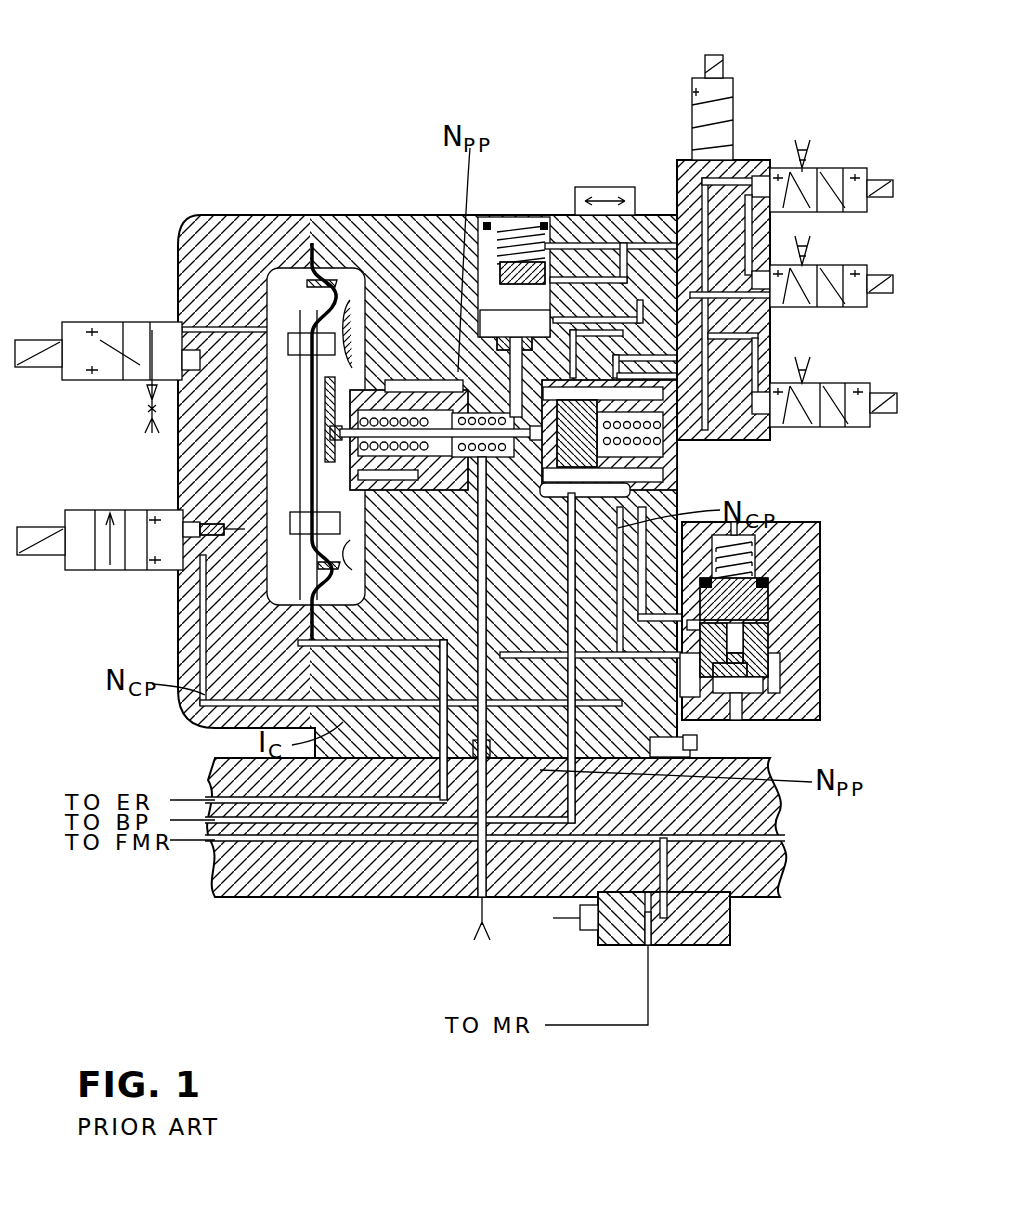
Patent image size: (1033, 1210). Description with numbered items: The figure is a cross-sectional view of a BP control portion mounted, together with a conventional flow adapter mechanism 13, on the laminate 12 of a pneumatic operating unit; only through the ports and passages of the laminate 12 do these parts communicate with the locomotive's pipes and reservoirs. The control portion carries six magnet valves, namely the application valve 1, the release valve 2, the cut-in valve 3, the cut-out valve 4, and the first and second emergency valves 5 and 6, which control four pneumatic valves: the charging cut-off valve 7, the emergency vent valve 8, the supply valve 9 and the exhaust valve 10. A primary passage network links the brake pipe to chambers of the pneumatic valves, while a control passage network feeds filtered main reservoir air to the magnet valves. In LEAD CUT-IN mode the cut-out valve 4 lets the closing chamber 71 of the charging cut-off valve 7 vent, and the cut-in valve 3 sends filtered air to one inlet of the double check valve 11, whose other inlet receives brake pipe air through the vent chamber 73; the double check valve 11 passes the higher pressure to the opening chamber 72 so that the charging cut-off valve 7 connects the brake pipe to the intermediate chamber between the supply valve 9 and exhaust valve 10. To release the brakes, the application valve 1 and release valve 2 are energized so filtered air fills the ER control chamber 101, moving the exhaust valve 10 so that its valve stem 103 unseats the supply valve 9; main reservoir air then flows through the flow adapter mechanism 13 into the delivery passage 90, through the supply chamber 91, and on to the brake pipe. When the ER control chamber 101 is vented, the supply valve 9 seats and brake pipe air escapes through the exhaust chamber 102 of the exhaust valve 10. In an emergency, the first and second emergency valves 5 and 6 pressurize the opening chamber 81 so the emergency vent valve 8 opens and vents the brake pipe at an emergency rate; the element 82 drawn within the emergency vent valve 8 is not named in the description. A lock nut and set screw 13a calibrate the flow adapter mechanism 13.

The application valve 1 is at (40, 348).
The release valve 2 is at (38, 545).
The cut-in valve 3 is at (705, 63).
The cut-out valve 4 is at (893, 403).
The first emergency valve 5 is at (887, 182).
The second emergency valve 6 is at (890, 285).
The charging cut-off valve 7 is at (530, 208).
The emergency vent valve 8 is at (838, 548).
The supply valve 9 is at (702, 452).
The exhaust valve 10 is at (388, 328).
The double check valve 11 is at (598, 186).
The laminate 12 is at (280, 900).
The flow adapter mechanism 13 is at (730, 924).
The lock nut and set screw 13a is at (585, 932).
The closing chamber 71 is at (532, 300).
The opening chamber 72 is at (545, 280).
The vent chamber 73 is at (493, 316).
The opening chamber 81 is at (763, 617).
The valve 82 is at (748, 667).
The delivery passage 90 is at (575, 735).
The supply chamber 91 is at (618, 482).
The ER control chamber 101 is at (283, 278).
The exhaust chamber 102 is at (421, 372).
The valve stem 103 is at (372, 378).